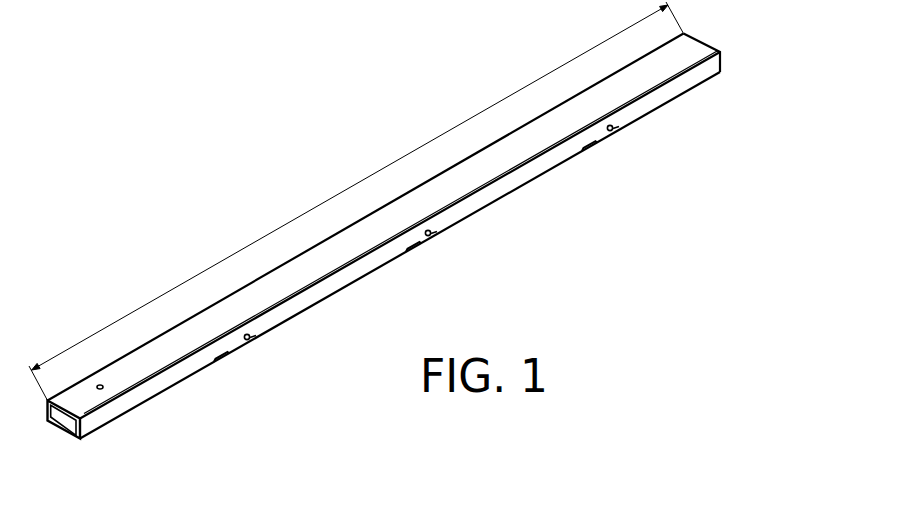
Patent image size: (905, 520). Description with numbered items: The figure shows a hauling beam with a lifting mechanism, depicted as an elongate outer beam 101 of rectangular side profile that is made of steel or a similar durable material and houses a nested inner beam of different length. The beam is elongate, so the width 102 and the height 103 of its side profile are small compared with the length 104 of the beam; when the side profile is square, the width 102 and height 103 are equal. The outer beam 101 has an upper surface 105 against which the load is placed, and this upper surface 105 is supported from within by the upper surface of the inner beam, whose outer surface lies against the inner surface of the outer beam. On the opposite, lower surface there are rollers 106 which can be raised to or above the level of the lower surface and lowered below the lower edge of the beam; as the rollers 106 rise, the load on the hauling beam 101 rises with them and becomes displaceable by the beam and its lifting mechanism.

The outer beam 101 is at (198, 375).
The width 102 is at (65, 430).
The height 103 is at (90, 429).
The length 104 is at (356, 201).
The upper surface 105 is at (448, 183).
The rollers 106 is at (227, 357).